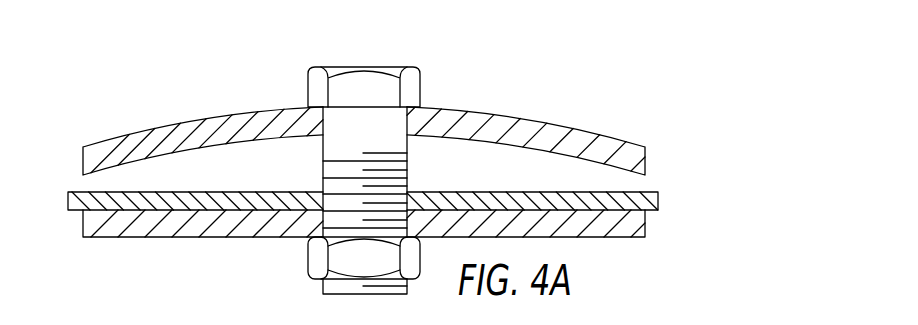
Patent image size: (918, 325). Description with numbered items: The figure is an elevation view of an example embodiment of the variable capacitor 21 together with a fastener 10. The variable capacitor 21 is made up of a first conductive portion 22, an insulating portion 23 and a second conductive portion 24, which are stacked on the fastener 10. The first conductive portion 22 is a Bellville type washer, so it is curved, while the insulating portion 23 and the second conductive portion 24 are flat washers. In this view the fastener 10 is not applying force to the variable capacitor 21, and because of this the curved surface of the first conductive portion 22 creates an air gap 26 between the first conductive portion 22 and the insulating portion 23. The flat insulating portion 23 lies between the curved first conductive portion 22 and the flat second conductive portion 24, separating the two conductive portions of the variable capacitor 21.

The fastener 10 is at (288, 81).
The variable capacitor 21 is at (409, 190).
The first conductive portion 22 is at (648, 158).
The insulating portion 23 is at (660, 200).
The second conductive portion 24 is at (378, 244).
The air gap 26 is at (490, 160).